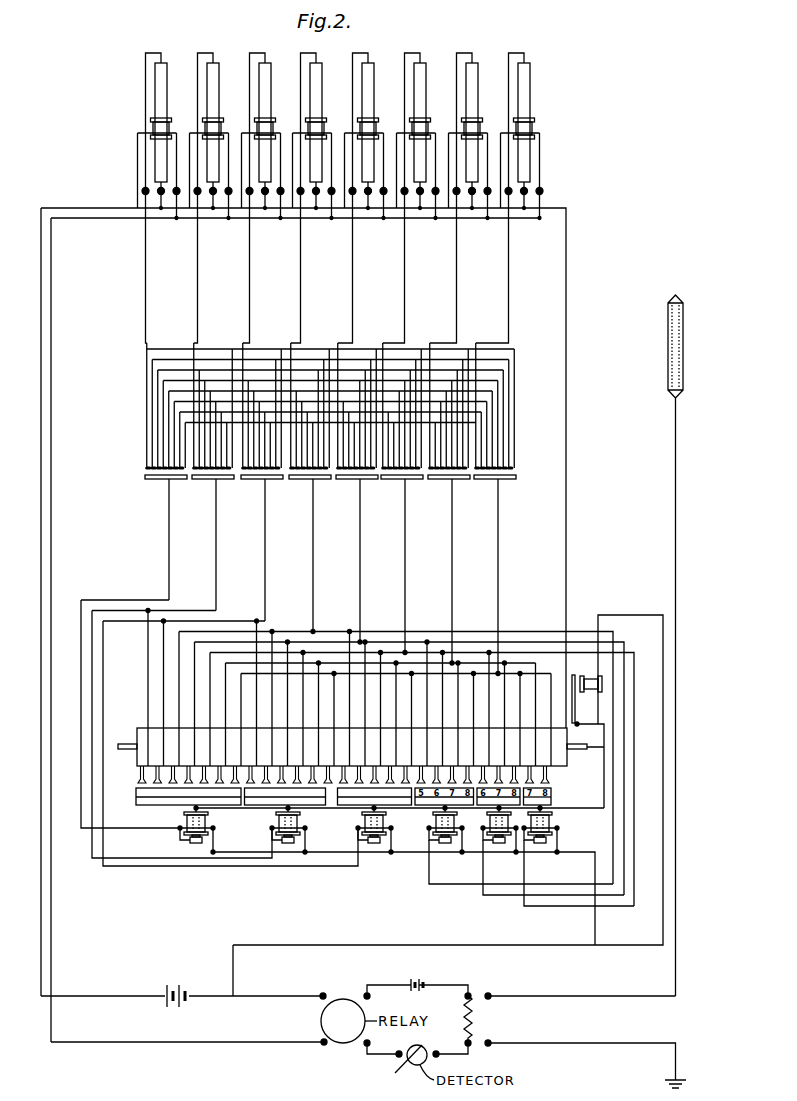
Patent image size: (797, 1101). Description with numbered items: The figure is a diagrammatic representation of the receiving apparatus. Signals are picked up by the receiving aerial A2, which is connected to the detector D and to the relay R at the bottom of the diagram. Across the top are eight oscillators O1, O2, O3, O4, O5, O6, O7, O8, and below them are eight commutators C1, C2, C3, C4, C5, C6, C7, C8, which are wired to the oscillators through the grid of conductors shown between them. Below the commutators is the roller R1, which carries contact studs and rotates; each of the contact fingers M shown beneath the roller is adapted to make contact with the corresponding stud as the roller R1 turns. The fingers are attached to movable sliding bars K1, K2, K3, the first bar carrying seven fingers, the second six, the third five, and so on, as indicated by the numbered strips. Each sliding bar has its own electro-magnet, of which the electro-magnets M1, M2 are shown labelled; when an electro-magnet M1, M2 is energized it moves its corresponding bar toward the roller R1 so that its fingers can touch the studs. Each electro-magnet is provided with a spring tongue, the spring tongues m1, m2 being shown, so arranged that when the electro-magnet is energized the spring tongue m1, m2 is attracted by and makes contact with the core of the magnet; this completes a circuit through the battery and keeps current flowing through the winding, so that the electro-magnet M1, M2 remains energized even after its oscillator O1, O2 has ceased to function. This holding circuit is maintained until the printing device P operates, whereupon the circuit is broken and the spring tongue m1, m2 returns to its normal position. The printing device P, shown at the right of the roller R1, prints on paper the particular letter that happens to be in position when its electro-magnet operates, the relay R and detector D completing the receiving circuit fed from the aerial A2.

The oscillator O1 is at (159, 190).
The oscillator O2 is at (211, 190).
The oscillator O3 is at (263, 190).
The oscillator O4 is at (313, 190).
The oscillator O5 is at (362, 190).
The oscillator O6 is at (411, 190).
The oscillator O7 is at (460, 190).
The oscillator O8 is at (509, 190).
The commutator C1 is at (163, 471).
The commutator C2 is at (212, 477).
The commutator C3 is at (260, 482).
The commutator C4 is at (308, 487).
The commutator C5 is at (355, 492).
The commutator C6 is at (401, 498).
The commutator C7 is at (448, 503).
The commutator C8 is at (494, 508).
The receiving aerial A2 is at (676, 424).
The roller R1 is at (141, 740).
The electro-magnet M is at (140, 774).
The contact strip 1 K1 is at (152, 806).
The contact strip 2 K2 is at (264, 806).
The contact strip 3 K3 is at (410, 806).
The electro-magnet M1 is at (213, 823).
The electro-magnet M2 is at (306, 823).
The spring tongue m1 is at (190, 839).
The spring tongue m2 is at (308, 842).
The printing device P is at (587, 700).
The relay R is at (343, 1021).
The detector D is at (408, 1061).